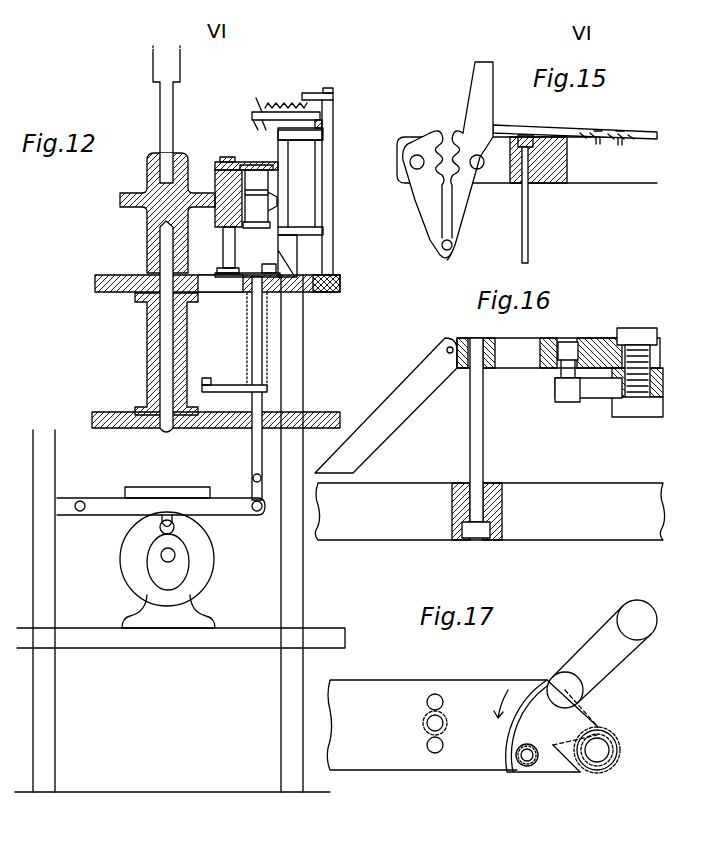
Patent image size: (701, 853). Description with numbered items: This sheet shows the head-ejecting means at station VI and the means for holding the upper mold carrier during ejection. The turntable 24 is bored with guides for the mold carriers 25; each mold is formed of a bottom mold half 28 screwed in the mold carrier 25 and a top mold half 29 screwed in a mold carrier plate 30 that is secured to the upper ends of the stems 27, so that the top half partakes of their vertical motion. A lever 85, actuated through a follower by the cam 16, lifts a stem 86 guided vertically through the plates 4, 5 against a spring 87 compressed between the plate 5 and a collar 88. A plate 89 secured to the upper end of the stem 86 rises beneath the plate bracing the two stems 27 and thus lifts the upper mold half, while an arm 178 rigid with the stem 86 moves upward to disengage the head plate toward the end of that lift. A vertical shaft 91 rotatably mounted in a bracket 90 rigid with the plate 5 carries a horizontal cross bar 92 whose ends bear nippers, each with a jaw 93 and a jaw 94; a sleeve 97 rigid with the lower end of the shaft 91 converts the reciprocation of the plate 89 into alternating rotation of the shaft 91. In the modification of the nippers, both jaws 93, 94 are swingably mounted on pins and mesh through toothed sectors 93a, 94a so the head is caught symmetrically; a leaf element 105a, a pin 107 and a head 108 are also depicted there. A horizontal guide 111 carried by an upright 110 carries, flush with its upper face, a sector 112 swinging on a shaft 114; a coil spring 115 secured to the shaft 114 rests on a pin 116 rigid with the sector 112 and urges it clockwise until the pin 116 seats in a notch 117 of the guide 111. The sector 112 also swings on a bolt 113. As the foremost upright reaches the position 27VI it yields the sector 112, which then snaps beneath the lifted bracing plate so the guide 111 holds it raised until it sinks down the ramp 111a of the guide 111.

In FIG. 12, the plate 4 is at (320, 422).
In FIG. 12, the plate 5 is at (314, 287).
In FIG. 16, the plate 5 is at (576, 494).
In FIG. 12, the cam 16 is at (150, 572).
In FIG. 12, the turntable 24 is at (150, 160).
In FIG. 12, the mold carrier 25 is at (259, 216).
In FIG. 12, the stem 27 is at (224, 242).
In FIG. 17, the position of upright 27 at station VI 27VI is at (583, 698).
In FIG. 12, the bottom mold half 28 is at (259, 178).
In FIG. 12, the top mold half 29 is at (246, 170).
In FIG. 12, the mold carrier plate 30 is at (240, 165).
In FIG. 12, the lever 85 is at (221, 505).
In FIG. 12, the stem 86 is at (259, 412).
In FIG. 12, the spring 87 is at (268, 330).
In FIG. 12, the collar 88 is at (262, 388).
In FIG. 12, the plate 89 is at (240, 272).
In FIG. 12, the bracket 90 is at (328, 206).
In FIG. 12, the vertical shaft 91 is at (285, 198).
In FIG. 12, the cross bar 92 is at (267, 105).
In FIG. 15, the cross bar 92 is at (552, 175).
In FIG. 15, the fixed jaw 93 is at (421, 179).
In FIG. 15, the toothed sector 93a is at (443, 133).
In FIG. 15, the movable jaw 94 is at (469, 161).
In FIG. 15, the toothed sector 94a is at (455, 135).
In FIG. 12, the sleeve 97 is at (286, 249).
In FIG. 15, the spring 105a is at (540, 130).
In FIG. 15, the rod 107 is at (528, 228).
In FIG. 15, the pin head 108 is at (517, 133).
In FIG. 16, the upright 110 is at (477, 443).
In FIG. 17, the upright 110 is at (442, 708).
In FIG. 16, the horizontal guide 111 is at (503, 342).
In FIG. 17, the horizontal guide 111 is at (458, 742).
In FIG. 16, the ramp 111a is at (402, 392).
In FIG. 17, the ramp 111a is at (437, 725).
In FIG. 16, the sector 112 is at (595, 342).
In FIG. 17, the sector 112 is at (546, 726).
In FIG. 16, the bolt 113 is at (633, 330).
In FIG. 17, the bolt 113 is at (613, 748).
In FIG. 16, the shaft 114 is at (640, 400).
In FIG. 17, the shaft 114 is at (612, 768).
In FIG. 16, the coil spring 115 is at (597, 394).
In FIG. 17, the coil spring 115 is at (560, 750).
In FIG. 16, the pin 116 is at (556, 396).
In FIG. 17, the pin 116 is at (527, 767).
In FIG. 16, the notch 117 is at (550, 370).
In FIG. 17, the notch 117 is at (535, 760).
In FIG. 12, the arm 178 is at (207, 377).